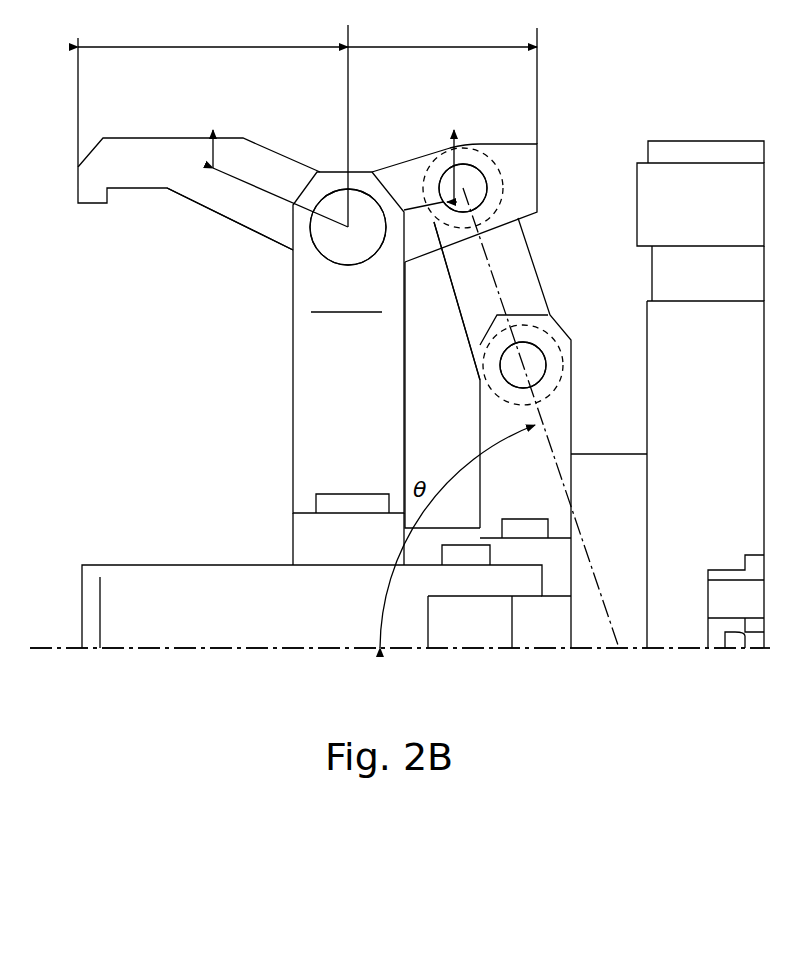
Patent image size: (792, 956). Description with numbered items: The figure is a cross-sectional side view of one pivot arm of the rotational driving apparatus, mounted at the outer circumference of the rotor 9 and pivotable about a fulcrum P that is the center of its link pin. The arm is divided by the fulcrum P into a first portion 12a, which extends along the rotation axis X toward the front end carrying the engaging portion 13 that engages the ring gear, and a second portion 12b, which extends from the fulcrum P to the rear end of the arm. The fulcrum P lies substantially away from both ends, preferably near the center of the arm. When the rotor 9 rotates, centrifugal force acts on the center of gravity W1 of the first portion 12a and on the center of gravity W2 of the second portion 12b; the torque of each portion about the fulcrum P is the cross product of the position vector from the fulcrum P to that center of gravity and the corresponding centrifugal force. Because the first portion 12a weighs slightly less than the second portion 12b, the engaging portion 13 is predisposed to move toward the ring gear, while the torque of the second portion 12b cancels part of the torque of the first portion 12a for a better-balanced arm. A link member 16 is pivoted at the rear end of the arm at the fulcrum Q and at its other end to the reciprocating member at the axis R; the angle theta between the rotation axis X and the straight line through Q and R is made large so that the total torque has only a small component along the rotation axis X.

The rotor 9 is at (313, 414).
The engaging portion 13 is at (93, 200).
The link member 16 is at (522, 258).
The first portion 12a is at (213, 121).
The second portion 12b is at (442, 79).
The fulcrum P is at (348, 228).
The fulcrum Q is at (463, 188).
The axis of link pin R is at (523, 365).
The rotation axis X is at (548, 650).
The center of gravity of the first portion W1 is at (210, 172).
The center of gravity of the second portion W2 is at (455, 206).